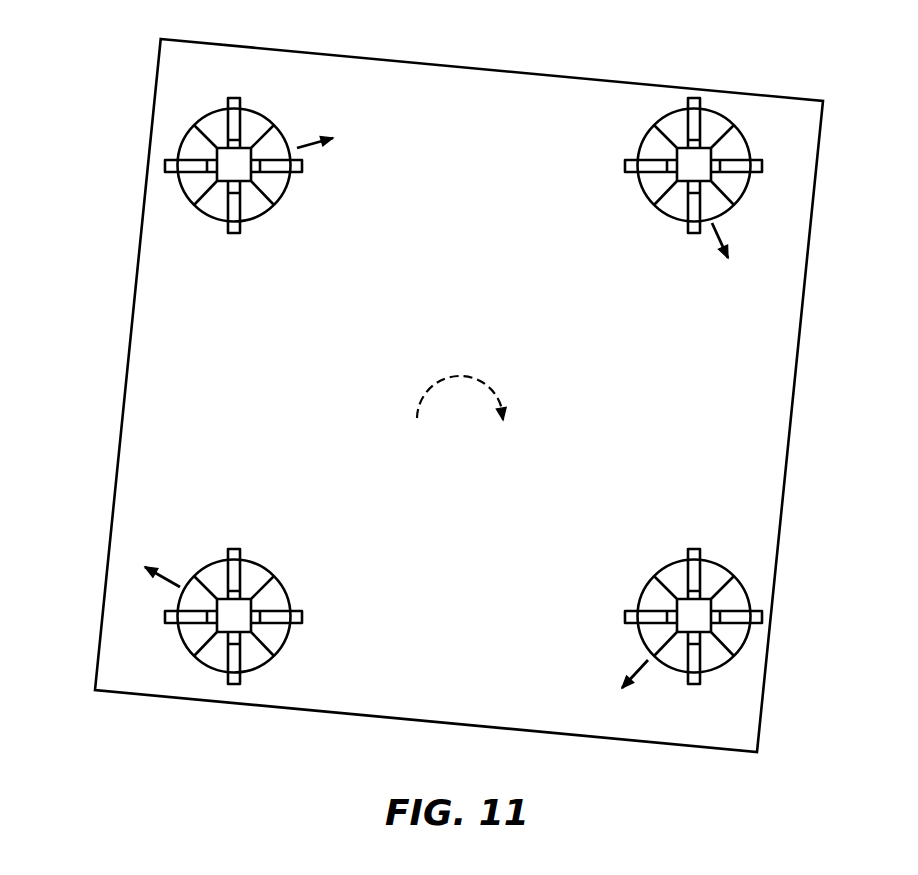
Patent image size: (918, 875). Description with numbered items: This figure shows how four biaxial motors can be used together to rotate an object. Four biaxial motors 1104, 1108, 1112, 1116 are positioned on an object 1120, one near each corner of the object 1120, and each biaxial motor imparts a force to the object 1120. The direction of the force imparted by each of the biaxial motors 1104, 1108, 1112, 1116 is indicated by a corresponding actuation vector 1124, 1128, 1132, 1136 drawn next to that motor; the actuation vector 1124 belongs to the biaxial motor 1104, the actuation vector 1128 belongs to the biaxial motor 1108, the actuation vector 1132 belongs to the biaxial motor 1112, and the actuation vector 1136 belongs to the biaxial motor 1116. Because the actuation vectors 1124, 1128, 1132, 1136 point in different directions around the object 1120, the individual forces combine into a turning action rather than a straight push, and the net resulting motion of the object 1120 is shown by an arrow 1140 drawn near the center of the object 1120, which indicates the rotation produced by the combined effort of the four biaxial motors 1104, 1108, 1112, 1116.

The biaxial motor 1104 is at (173, 132).
The biaxial motor 1108 is at (757, 133).
The biaxial motor 1112 is at (718, 675).
The biaxial motor 1116 is at (170, 635).
The object 1120 is at (435, 722).
The actuation vector 1124 is at (310, 148).
The actuation vector 1128 is at (717, 240).
The actuation vector 1132 is at (628, 667).
The actuation vector 1136 is at (167, 582).
The arrow 1140 is at (422, 395).